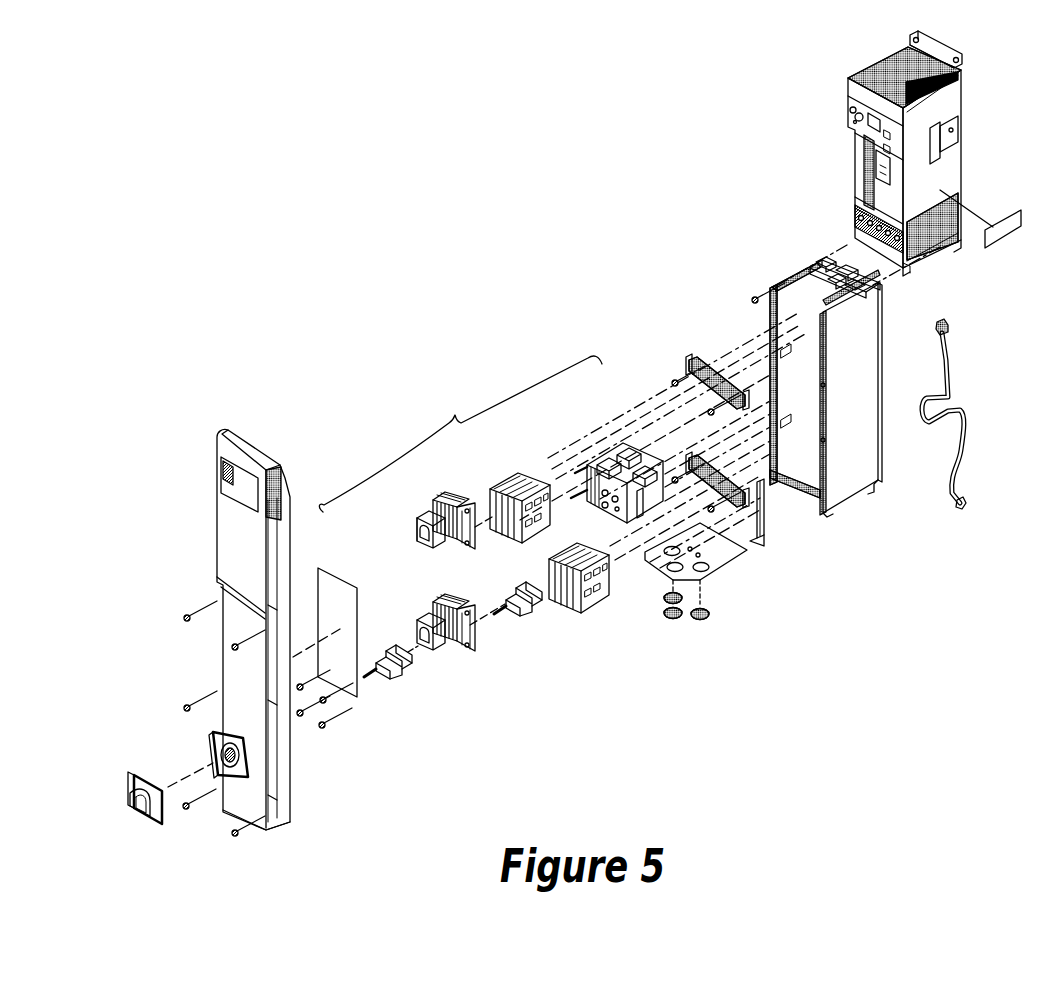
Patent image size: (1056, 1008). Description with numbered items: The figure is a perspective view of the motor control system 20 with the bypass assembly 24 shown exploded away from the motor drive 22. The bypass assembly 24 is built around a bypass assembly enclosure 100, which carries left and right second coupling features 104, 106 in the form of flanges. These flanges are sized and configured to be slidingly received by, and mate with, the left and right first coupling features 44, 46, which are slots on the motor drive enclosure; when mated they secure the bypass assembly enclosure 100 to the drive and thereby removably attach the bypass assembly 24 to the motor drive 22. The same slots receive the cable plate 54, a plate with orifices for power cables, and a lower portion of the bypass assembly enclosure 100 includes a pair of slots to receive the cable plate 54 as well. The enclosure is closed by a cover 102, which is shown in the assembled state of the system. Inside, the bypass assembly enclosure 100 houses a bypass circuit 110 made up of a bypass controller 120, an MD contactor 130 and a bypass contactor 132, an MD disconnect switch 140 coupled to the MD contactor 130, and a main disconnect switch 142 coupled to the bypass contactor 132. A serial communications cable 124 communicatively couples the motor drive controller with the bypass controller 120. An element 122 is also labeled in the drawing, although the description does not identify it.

The motor control system 20 is at (513, 126).
The motor drive 22 is at (826, 153).
The bypass assembly 24 is at (523, 262).
The left first coupling feature 44 is at (852, 230).
The right first coupling feature 46 is at (916, 270).
The cable plate 54 is at (722, 563).
The bypass assembly enclosure 100 is at (772, 352).
The cover 102 is at (232, 566).
The left second coupling feature 104 is at (773, 290).
The right second coupling feature 106 is at (843, 312).
The bypass circuit 110 is at (460, 434).
The bypass controller 120 is at (635, 460).
The relay 122 is at (583, 497).
The serial communications cable 124 is at (950, 388).
The MD contactor 130 is at (487, 500).
The bypass contactor 132 is at (583, 603).
The MD disconnect switch 140 is at (416, 533).
The main disconnect switch 142 is at (420, 632).